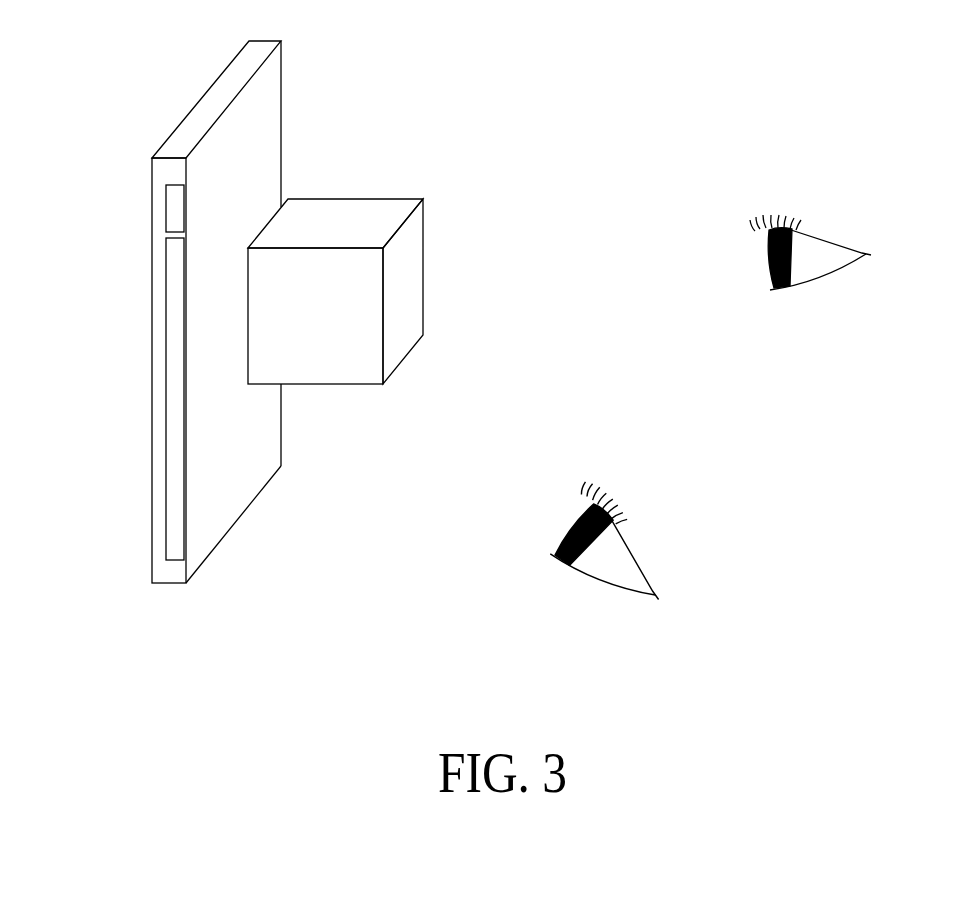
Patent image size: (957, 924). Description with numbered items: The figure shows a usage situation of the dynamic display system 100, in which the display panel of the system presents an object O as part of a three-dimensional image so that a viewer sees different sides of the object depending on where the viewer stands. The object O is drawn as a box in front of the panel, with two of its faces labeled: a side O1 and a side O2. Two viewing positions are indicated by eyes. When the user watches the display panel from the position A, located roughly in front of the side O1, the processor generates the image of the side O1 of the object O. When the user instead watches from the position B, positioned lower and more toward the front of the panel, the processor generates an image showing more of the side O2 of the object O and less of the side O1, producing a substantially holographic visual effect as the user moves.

The dynamic display system 100 is at (207, 92).
The object O is at (383, 286).
The side of the object O1 is at (410, 277).
The side of the object O2 is at (320, 363).
The position A is at (839, 252).
The position B is at (619, 553).